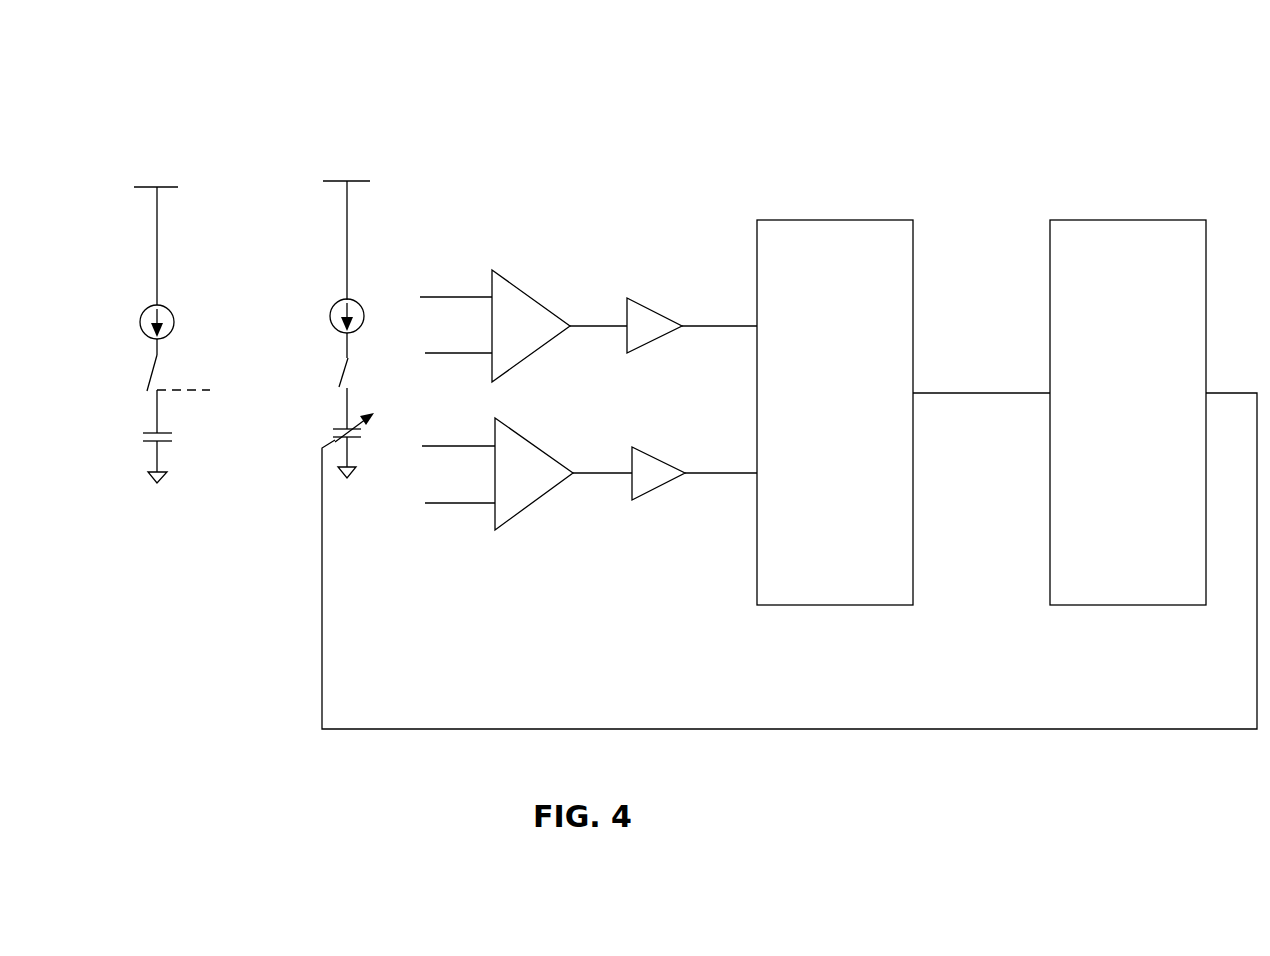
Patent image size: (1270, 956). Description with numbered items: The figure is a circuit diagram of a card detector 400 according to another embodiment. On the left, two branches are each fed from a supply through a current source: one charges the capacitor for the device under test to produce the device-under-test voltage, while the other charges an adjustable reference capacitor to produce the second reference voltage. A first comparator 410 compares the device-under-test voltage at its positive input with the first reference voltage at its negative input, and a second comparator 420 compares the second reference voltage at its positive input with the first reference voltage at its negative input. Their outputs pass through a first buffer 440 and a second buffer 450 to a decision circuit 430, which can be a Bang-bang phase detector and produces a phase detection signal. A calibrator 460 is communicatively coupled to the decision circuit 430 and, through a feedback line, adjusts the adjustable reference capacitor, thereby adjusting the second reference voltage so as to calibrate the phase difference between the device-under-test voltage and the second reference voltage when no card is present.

The card detector 400 is at (952, 85).
The first comparator 410 is at (523, 292).
The second comparator 420 is at (523, 440).
The decision circuit 430 is at (913, 264).
The first buffer 440 is at (633, 300).
The second buffer 450 is at (636, 448).
The calibrator 460 is at (1077, 216).